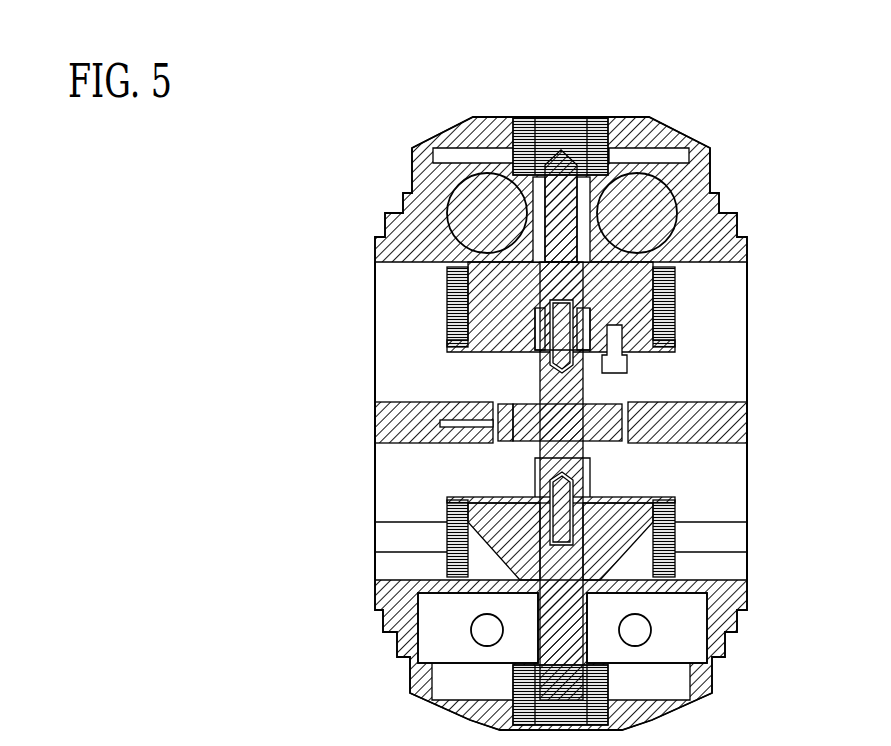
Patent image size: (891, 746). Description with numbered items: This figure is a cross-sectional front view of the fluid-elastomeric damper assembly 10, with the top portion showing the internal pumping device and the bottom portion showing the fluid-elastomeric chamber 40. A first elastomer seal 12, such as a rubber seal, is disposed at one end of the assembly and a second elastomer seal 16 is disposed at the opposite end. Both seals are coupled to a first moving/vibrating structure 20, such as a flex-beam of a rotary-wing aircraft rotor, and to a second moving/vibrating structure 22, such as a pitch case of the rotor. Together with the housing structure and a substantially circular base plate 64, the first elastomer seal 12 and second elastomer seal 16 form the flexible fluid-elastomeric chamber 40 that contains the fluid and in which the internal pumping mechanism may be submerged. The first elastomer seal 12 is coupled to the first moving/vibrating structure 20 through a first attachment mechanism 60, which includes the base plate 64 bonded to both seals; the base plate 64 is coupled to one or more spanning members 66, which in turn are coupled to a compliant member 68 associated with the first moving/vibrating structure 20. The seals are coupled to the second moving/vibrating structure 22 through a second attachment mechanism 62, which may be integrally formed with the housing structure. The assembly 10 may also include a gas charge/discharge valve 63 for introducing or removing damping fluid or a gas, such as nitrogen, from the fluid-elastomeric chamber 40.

The fluid-elastomeric damper assembly 10 is at (746, 122).
The first elastomer seal 12 is at (694, 314).
The second elastomer seal 16 is at (634, 130).
The first moving/vibrating structure 20 is at (750, 424).
The second moving/vibrating structure 22 is at (766, 278).
The fluid-elastomeric chamber 40 is at (496, 297).
The first attachment mechanism 60 is at (598, 389).
The second attachment mechanism 62 is at (755, 218).
The gas charge/discharge valve 63 is at (627, 373).
The substantially circular base plate 64 is at (645, 353).
The spanning members 66 is at (532, 370).
The compliant member 68 is at (551, 390).